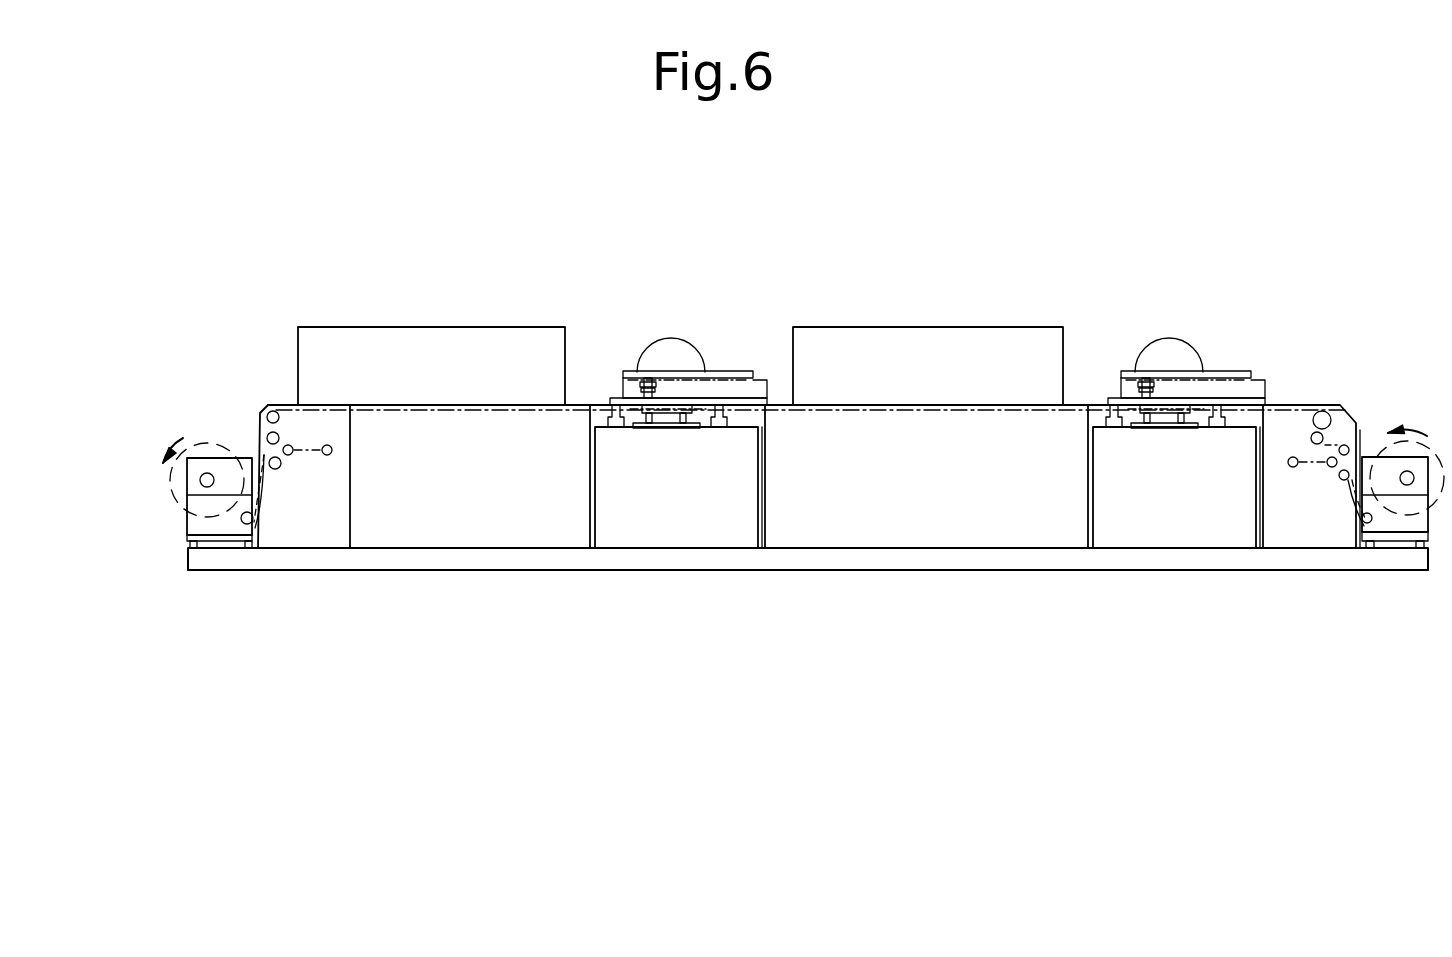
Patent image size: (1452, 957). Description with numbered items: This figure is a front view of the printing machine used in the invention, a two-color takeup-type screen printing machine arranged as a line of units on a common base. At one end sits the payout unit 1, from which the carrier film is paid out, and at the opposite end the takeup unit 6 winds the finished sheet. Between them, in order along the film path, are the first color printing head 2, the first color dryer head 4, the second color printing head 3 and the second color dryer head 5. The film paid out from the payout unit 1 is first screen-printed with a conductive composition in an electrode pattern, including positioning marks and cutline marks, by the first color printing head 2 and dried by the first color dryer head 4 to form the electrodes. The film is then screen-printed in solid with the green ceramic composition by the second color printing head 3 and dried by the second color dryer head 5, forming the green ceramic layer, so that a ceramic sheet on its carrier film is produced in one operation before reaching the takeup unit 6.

The payout unit 1 is at (1415, 422).
The first color printing head 2 is at (1173, 342).
The second color printing head 3 is at (681, 340).
The first color dryer head 4 is at (945, 318).
The second color dryer head 5 is at (432, 322).
The takeup unit 6 is at (228, 432).